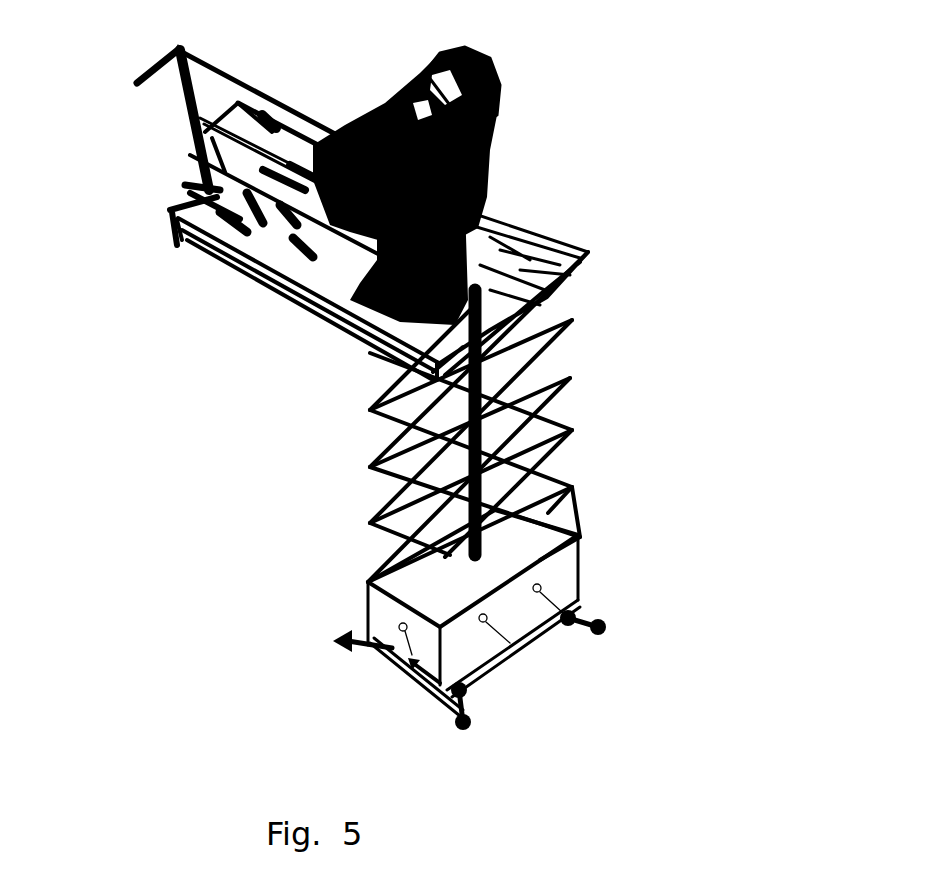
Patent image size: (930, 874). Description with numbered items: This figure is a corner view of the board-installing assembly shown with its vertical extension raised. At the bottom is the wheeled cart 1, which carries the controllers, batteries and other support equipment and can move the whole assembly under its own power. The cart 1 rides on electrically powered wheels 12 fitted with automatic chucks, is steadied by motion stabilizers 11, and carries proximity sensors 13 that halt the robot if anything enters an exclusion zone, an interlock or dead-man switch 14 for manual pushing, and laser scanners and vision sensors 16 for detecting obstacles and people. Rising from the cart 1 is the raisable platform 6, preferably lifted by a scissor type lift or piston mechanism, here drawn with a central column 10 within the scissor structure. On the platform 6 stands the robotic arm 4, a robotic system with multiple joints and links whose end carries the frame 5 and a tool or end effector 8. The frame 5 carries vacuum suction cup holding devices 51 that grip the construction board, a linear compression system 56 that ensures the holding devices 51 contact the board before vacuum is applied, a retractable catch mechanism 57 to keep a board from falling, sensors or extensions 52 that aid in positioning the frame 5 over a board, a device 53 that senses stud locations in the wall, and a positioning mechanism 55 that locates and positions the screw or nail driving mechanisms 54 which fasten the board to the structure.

The cart 1 is at (474, 652).
The robotic arm 4 is at (485, 150).
The frame 5 is at (252, 293).
The raisable platform 6 is at (573, 433).
The end effector 8 is at (498, 80).
The lifting column 10 is at (487, 433).
The motion stabilizers 11 is at (590, 607).
The wheels 12 is at (473, 650).
The proximity sensors 13 is at (368, 585).
The interlock switch 14 is at (575, 522).
The laser scanners and vision sensors 16 is at (403, 633).
The holding devices 51 is at (187, 130).
The sensors or extensions 52 is at (157, 68).
The stud sensing device 53 is at (200, 190).
The screw/nail-driving mechanisms 54 is at (267, 113).
The positioning mechanism 55 is at (207, 67).
The linear compression system 56 is at (262, 112).
The retractable catch mechanism 57 is at (180, 243).